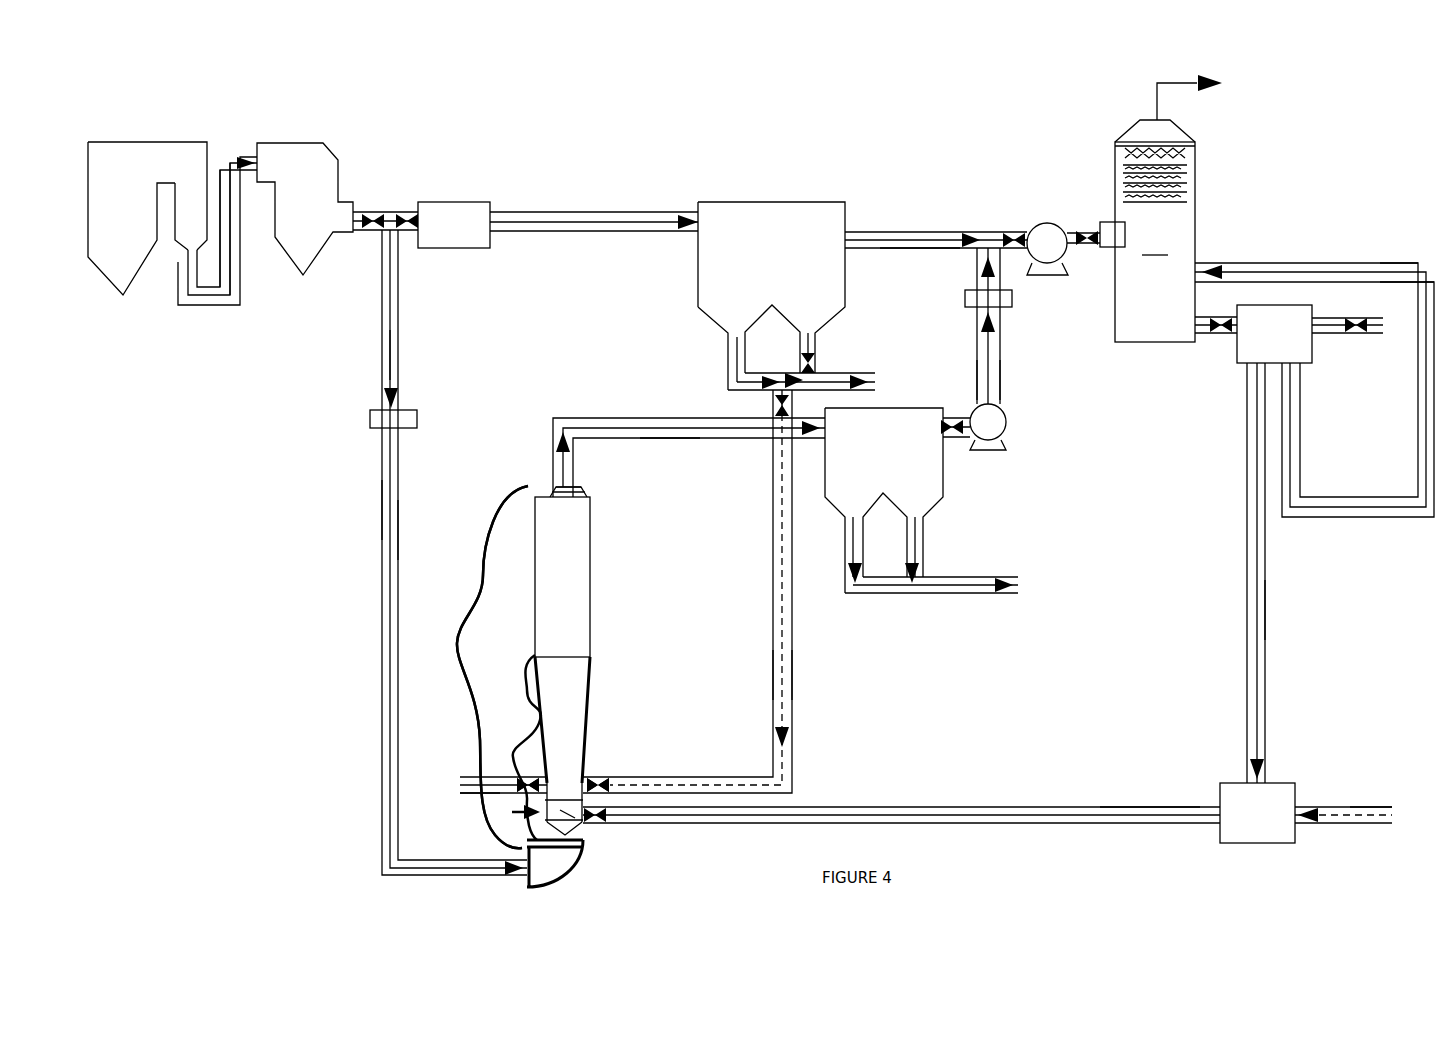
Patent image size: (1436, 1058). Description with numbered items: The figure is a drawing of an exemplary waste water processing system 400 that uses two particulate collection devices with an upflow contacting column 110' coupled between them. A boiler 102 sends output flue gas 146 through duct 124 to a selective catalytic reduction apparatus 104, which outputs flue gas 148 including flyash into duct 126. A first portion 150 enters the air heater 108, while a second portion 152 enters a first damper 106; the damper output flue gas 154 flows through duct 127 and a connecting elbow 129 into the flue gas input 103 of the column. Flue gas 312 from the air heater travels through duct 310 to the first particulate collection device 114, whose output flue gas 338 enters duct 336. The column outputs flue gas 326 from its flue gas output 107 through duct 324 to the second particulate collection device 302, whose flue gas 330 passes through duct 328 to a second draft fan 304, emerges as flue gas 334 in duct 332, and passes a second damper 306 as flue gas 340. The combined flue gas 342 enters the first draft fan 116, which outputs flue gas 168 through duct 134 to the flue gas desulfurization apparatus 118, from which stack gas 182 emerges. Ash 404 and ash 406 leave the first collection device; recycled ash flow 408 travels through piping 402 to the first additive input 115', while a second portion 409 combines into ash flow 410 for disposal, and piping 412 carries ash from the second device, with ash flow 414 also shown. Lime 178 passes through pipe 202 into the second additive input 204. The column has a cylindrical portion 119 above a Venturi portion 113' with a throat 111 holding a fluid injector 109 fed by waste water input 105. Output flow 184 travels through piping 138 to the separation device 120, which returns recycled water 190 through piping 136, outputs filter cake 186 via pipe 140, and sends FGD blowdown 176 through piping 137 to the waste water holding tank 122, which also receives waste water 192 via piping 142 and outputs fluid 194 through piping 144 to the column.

The waste water processing system 400 is at (150, 74).
The boiler 102 is at (152, 142).
The selective catalytic reduction (SCR) apparatus 104 is at (292, 143).
The air heater (AH) 108 is at (455, 201).
The flue gas 148 is at (376, 214).
The first portion of the flue gas 150 is at (407, 214).
The flue gas 312 is at (580, 212).
The duct 310 is at (560, 232).
The first particulate collection device (PCD) 114 is at (748, 204).
The duct 336 is at (931, 230).
The flue gas 338 is at (900, 242).
The flue gas 342 is at (1012, 236).
The first draft fan 116 is at (1047, 223).
The flue gas 168 is at (1088, 233).
The duct 134 is at (1070, 240).
The flue gas desulfurization (FGD) apparatus 118 is at (1196, 229).
The stack gas 182 is at (1175, 82).
The recycled water 190 is at (1300, 270).
The piping 136 is at (1357, 263).
The output flow 184 is at (1222, 319).
The filter cake 186 is at (1352, 320).
The pipe 140 is at (1360, 334).
The separation device 120 is at (1312, 341).
The piping 138 is at (1208, 338).
The ash 406 is at (815, 361).
The ash 404 is at (736, 364).
The second portion of ash 409 is at (797, 375).
The ash flow 410 is at (868, 381).
The ash flow 408 is at (775, 406).
The flue gas 326 is at (640, 419).
The duct 324 is at (663, 440).
The second damper 306 is at (965, 299).
The flue gas 340 is at (978, 271).
The flue gas 334 is at (1000, 348).
The duct 332 is at (975, 373).
The flue gas 330 is at (950, 418).
The second draft fan 304 is at (1007, 419).
The duct 328 is at (952, 439).
The second particulate collection device (PCD) 302 is at (943, 488).
The outlet stream 414 is at (1016, 586).
The piping 412 is at (940, 598).
The flue gas output 107 is at (575, 494).
The cylindrical portion 119 is at (592, 587).
The upflow contacting column 110' is at (476, 667).
The piping 402 is at (795, 652).
The pipe 202 is at (470, 775).
The lime 178 is at (468, 795).
The valve 113' is at (511, 772).
The second additive input 204 is at (543, 778).
The first additive input 115' is at (608, 767).
The throat 111 is at (512, 813).
The waste water input 105 is at (584, 814).
The fluid injector 109 is at (578, 822).
The flue gas input 103 is at (565, 834).
The connecting elbow 129 is at (570, 874).
The first damper 106 is at (368, 419).
The flue gas 154 is at (383, 509).
The duct 127 is at (383, 539).
The duct 126 is at (382, 324).
The second portion of flue gas 152 is at (390, 355).
The duct 124 is at (185, 306).
The output flue gas 146 is at (221, 296).
The piping 137 is at (1247, 561).
The FGD blowdown 176 is at (1258, 614).
The waste water holding tank 122 is at (1293, 784).
The input waste water 192 is at (1350, 806).
The piping 142 is at (1378, 806).
The waste water flow 194 is at (965, 807).
The piping 144 is at (1090, 807).